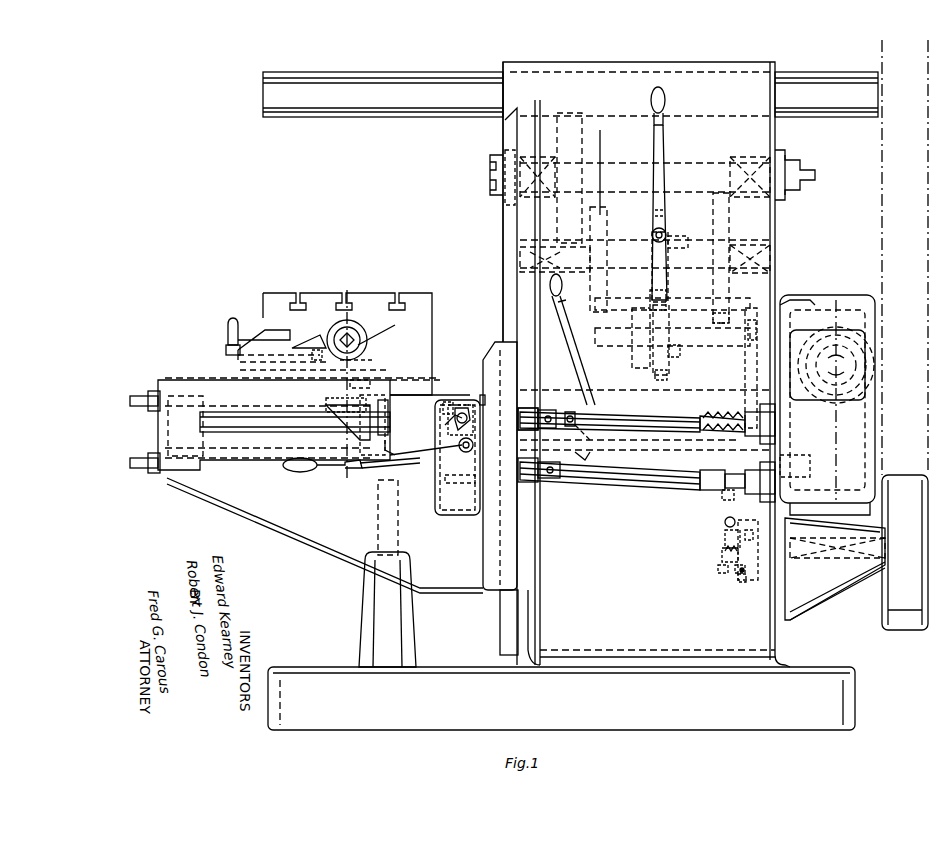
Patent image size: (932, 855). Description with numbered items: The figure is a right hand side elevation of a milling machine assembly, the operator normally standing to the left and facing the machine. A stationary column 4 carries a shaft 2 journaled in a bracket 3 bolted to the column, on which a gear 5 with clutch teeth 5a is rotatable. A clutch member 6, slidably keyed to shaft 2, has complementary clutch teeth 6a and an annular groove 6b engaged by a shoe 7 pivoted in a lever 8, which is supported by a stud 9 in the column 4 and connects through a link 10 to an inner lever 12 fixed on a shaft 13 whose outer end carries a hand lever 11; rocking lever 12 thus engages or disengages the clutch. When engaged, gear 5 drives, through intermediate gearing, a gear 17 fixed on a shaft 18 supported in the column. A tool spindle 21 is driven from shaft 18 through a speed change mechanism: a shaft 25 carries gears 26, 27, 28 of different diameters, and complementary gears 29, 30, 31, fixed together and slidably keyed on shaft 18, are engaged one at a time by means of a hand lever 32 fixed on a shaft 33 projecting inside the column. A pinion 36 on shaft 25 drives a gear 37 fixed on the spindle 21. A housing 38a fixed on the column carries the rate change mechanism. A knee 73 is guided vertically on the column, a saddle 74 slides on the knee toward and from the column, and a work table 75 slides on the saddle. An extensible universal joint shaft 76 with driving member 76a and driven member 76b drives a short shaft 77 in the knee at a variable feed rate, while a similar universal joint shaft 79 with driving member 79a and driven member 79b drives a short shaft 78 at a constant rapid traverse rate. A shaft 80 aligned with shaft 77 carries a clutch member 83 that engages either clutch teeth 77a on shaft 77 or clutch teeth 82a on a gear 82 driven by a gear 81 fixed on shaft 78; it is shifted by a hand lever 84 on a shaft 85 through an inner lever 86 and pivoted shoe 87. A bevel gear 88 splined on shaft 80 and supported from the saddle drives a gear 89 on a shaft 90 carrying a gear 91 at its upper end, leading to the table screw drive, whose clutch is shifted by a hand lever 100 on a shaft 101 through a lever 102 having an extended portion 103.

The shaft 2 is at (834, 556).
The bracket 3 is at (818, 287).
The column 4 is at (503, 255).
The gear 5 is at (752, 580).
The clutch teeth 5a is at (742, 580).
The clutch member 6 is at (725, 572).
The clutch teeth 6a is at (742, 578).
The annular groove 6b is at (726, 532).
The shoe 7 is at (722, 552).
The lever 8 is at (724, 503).
The stud 9 is at (725, 520).
The link 10 is at (590, 442).
The hand lever 11 is at (570, 370).
The inner lever 12 is at (356, 440).
The shaft 13 is at (585, 418).
The gear 17 is at (752, 318).
The shaft 18 is at (715, 345).
The tool spindle 21 is at (490, 165).
The shaft 25 is at (688, 248).
The gear 26 is at (595, 306).
The gear 27 is at (667, 288).
The gear 28 is at (730, 290).
The complementary gear 29 is at (640, 368).
The complementary gear 30 is at (662, 380).
The complementary gear 31 is at (675, 356).
The hand lever 32 is at (662, 145).
The shaft 33 is at (652, 236).
The pinion 36 is at (568, 272).
The gear 37 is at (570, 118).
The housing 38a is at (855, 315).
The knee 73 is at (306, 536).
The saddle 74 is at (270, 340).
The work table 75 is at (408, 296).
The extensible universal joint shaft 76 is at (632, 418).
The driving member 76a is at (765, 418).
The driven member 76b is at (538, 408).
The short shaft 77 is at (498, 410).
The clutch teeth 77a is at (488, 380).
The short shaft 78 is at (473, 478).
The extensible universal joint shaft 79 is at (625, 488).
The driving member 79a is at (778, 480).
The driven member 79b is at (538, 482).
The shaft 80 is at (268, 426).
The gear 81 is at (445, 490).
The gear 82 is at (440, 395).
The clutch teeth 82a is at (450, 405).
The clutch member 83 is at (462, 400).
The hand lever 84 is at (342, 470).
The shaft 85 is at (465, 452).
The inner lever 86 is at (460, 448).
The shoe 87 is at (440, 428).
The bevel gear 88 is at (390, 392).
The gear 89 is at (348, 408).
The shaft 90 is at (356, 384).
The gear 91 is at (365, 355).
The hand lever 100 is at (226, 334).
The shaft 101 is at (258, 360).
The lever 102 is at (316, 346).
The portion 103 is at (345, 322).